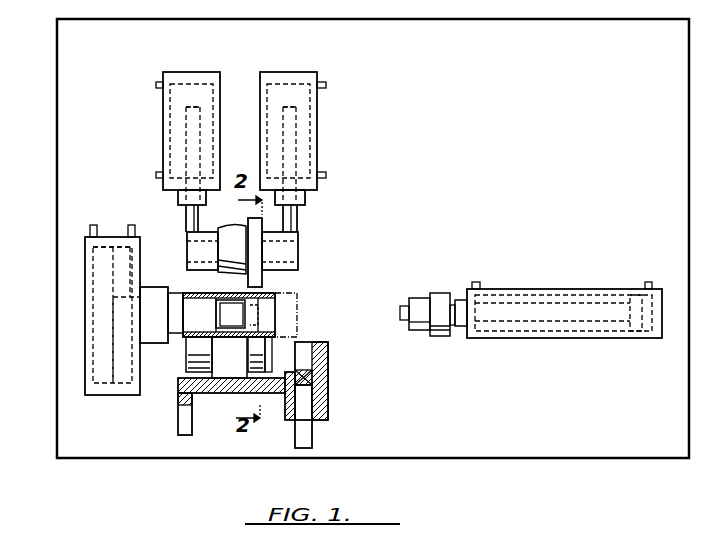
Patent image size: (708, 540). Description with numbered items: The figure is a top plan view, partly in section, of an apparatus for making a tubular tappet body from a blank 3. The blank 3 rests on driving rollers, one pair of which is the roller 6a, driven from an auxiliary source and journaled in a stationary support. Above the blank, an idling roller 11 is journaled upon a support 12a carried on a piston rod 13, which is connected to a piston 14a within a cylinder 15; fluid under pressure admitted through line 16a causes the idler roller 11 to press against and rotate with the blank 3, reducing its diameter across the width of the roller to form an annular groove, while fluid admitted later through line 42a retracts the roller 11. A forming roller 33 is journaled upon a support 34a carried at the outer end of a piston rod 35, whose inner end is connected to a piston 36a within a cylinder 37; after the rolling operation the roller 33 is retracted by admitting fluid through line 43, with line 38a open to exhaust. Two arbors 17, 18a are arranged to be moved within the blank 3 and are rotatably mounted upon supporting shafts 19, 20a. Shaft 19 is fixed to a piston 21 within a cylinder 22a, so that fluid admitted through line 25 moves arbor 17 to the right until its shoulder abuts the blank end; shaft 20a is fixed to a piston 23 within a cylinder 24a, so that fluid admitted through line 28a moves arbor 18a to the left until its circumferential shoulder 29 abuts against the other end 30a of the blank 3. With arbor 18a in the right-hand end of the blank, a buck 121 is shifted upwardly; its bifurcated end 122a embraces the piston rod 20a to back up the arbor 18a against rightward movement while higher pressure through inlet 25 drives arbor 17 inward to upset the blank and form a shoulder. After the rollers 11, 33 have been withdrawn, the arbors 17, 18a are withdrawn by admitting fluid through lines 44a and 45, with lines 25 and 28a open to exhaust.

The blank 3 is at (229, 357).
The roller 6a is at (195, 357).
The idling roller 11 is at (263, 288).
The support 12a is at (298, 238).
The piston rod 13 is at (296, 215).
The piston 14a is at (303, 97).
The cylinder 15 is at (318, 132).
The line 16a is at (326, 84).
The arbor 17 is at (195, 298).
The arbor 18a is at (415, 298).
The supporting shaft 19 is at (120, 337).
The supporting shaft 20a is at (455, 326).
The piston 21 is at (85, 262).
The cylinder 22a is at (100, 396).
The piston 23 is at (638, 338).
The cylinder 24a is at (560, 290).
The line 25 is at (90, 228).
The line 28a is at (664, 266).
The circumferential shoulder 29 is at (432, 333).
The end 30a is at (275, 300).
The forming roller 33 is at (242, 222).
The support 34a is at (190, 236).
The piston rod 35 is at (188, 212).
The piston 36a is at (182, 93).
The cylinder 37 is at (221, 88).
The line 38a is at (160, 84).
The line 42a is at (327, 175).
The line 43 is at (158, 175).
The line 44a is at (130, 228).
The line 45 is at (479, 288).
The buck 121 is at (318, 398).
The bifurcated end 122a is at (318, 362).